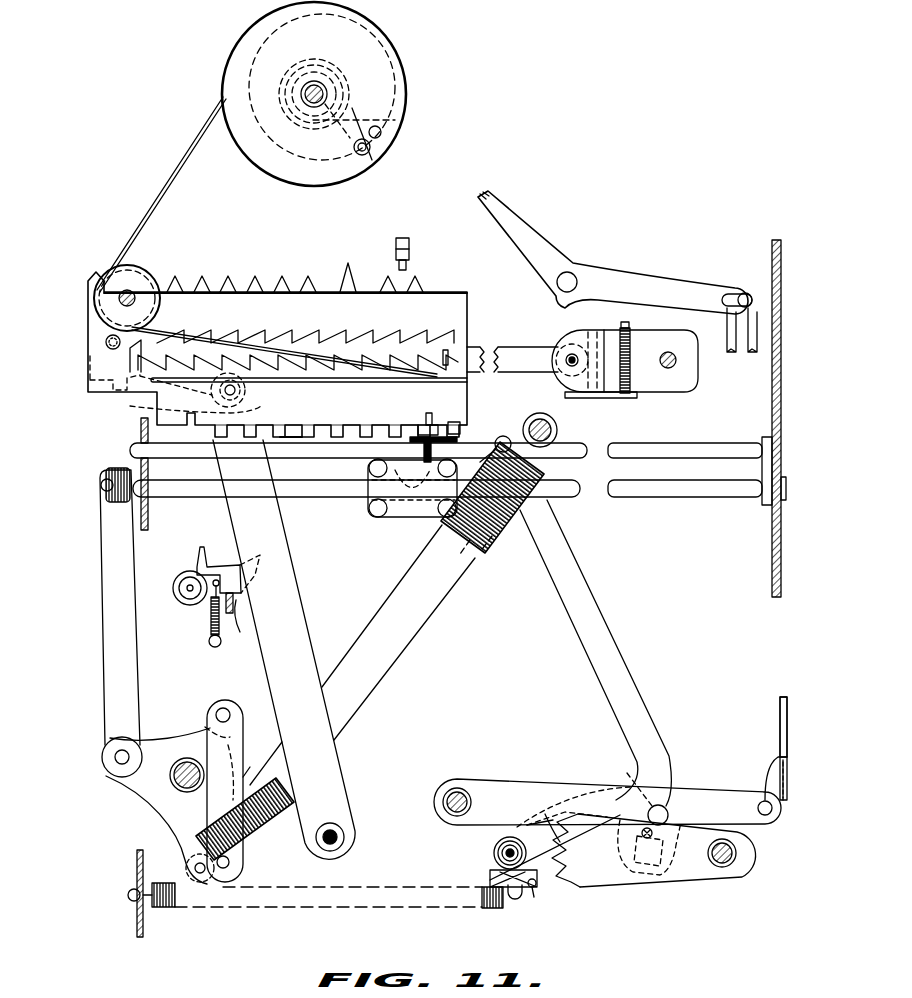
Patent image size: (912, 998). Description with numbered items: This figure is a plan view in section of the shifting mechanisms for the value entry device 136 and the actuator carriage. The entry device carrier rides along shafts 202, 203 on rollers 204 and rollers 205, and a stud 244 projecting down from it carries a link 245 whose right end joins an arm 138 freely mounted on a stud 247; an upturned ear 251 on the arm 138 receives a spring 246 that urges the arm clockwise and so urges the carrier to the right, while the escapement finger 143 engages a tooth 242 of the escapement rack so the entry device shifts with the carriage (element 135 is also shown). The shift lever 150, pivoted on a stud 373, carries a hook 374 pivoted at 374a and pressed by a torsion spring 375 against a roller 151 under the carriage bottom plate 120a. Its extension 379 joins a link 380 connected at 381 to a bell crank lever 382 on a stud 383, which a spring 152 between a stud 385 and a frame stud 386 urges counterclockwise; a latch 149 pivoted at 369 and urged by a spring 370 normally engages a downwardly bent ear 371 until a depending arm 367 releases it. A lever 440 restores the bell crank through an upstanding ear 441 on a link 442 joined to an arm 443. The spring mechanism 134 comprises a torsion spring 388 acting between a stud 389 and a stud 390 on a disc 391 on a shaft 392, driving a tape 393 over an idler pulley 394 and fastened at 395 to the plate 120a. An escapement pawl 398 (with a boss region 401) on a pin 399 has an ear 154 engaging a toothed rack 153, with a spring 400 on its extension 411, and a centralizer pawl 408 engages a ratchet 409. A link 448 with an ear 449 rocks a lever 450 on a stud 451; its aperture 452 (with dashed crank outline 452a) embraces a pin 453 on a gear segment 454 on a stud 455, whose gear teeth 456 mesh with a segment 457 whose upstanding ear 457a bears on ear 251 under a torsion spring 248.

The spring mechanism 134 is at (228, 55).
The disc 391 is at (300, 180).
The shaft 392 is at (313, 84).
The torsion spring 388 is at (336, 112).
The stud 390 is at (381, 134).
The stud 389 is at (370, 152).
The tape 393 is at (186, 148).
The idler pulley 394 is at (128, 284).
The actuator carriage bottom plate 120a is at (214, 300).
The ratchet 409 is at (348, 271).
The centralizer pawl 408 is at (410, 256).
The roller 151 is at (105, 340).
The toothed rack 153 is at (400, 332).
The upstanding ear 154 is at (446, 356).
The hook 374 is at (90, 378).
The pivot 374a is at (222, 396).
The torsion spring 375 is at (262, 394).
The tooth 242 is at (300, 432).
The rail 135 is at (291, 441).
The roller 205 is at (412, 442).
The tape connection 395 is at (428, 424).
The escapement finger 143 is at (470, 420).
The link 245 is at (470, 455).
The escapement pawl 398 is at (492, 344).
The spring 400 is at (632, 346).
The bracket boss 401 is at (560, 356).
The pin 399 is at (576, 354).
The extension 411 is at (603, 395).
The ear 449 is at (774, 788).
The link 448 is at (786, 717).
The upstanding ear 441 is at (130, 466).
The shaft 203 is at (728, 445).
The roller 204 is at (352, 487).
The shaft 202 is at (682, 497).
The lever 440 is at (106, 466).
The link 442 is at (106, 594).
The arm 443 is at (102, 760).
The value entry device 136 is at (400, 518).
The stud 244 is at (362, 491).
The stud 386 is at (556, 434).
The spring 152 is at (512, 542).
The arm 138 is at (612, 635).
The shift lever 150 is at (318, 744).
The stud 373 is at (348, 843).
The latch 149 is at (208, 565).
The pivot 369 is at (188, 582).
The spring 370 is at (210, 615).
The downwardly bent ear 371 is at (236, 598).
The depending arm 367 is at (238, 635).
The extension 379 is at (254, 702).
The link 380 is at (222, 742).
The lever 382 is at (186, 810).
The stud 383 is at (185, 778).
The pivot 381 is at (233, 868).
The stud 385 is at (200, 872).
The lever 450 is at (738, 815).
The stud 451 is at (446, 802).
The aperture 452 is at (662, 806).
The crank 452a is at (655, 880).
The pin 453 is at (656, 836).
The gear segment 454 is at (615, 880).
The stud 455 is at (728, 862).
The gear teeth 456 is at (568, 876).
The gear segment 457 is at (545, 814).
The upstanding ear 457a is at (536, 890).
The stud 247 is at (504, 853).
The torsion spring 248 is at (492, 878).
The spring 246 is at (490, 902).
The upturned ear 251 is at (517, 893).